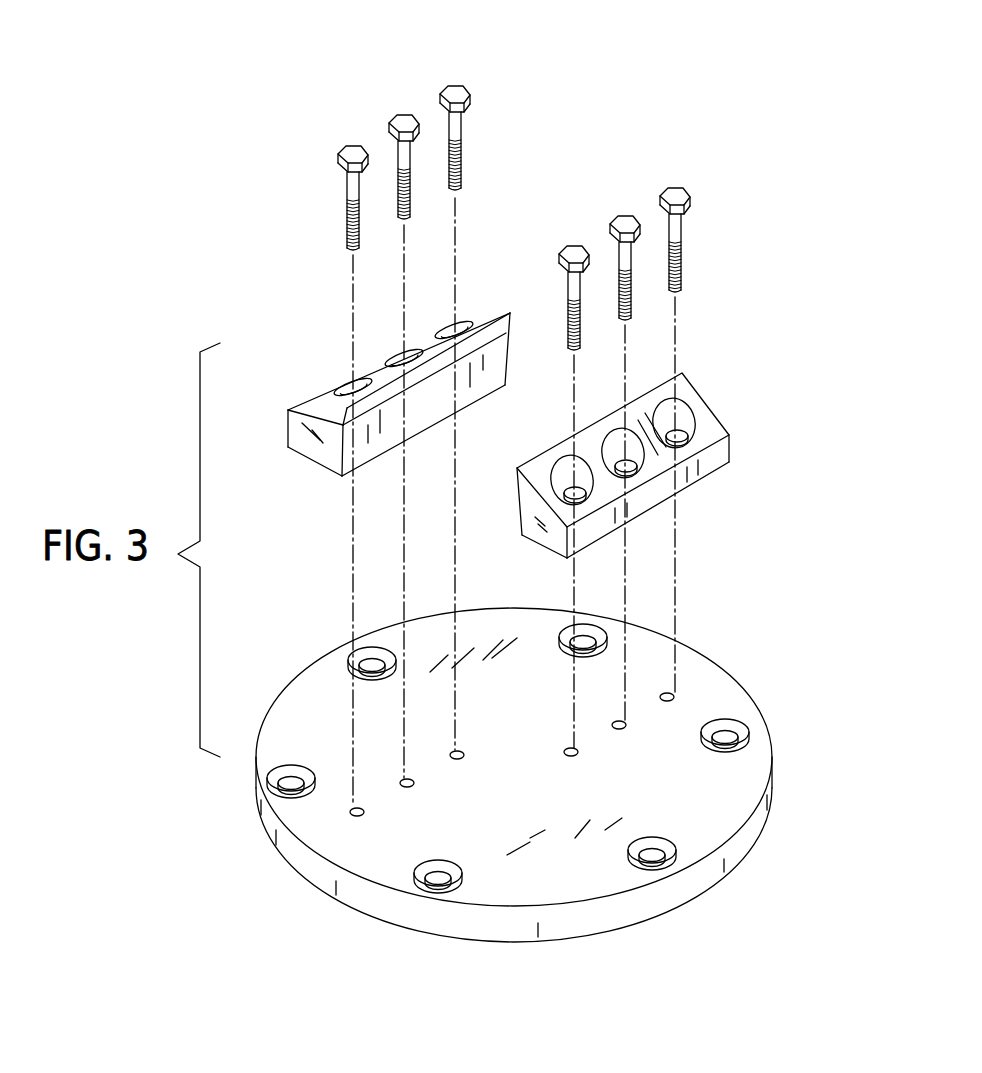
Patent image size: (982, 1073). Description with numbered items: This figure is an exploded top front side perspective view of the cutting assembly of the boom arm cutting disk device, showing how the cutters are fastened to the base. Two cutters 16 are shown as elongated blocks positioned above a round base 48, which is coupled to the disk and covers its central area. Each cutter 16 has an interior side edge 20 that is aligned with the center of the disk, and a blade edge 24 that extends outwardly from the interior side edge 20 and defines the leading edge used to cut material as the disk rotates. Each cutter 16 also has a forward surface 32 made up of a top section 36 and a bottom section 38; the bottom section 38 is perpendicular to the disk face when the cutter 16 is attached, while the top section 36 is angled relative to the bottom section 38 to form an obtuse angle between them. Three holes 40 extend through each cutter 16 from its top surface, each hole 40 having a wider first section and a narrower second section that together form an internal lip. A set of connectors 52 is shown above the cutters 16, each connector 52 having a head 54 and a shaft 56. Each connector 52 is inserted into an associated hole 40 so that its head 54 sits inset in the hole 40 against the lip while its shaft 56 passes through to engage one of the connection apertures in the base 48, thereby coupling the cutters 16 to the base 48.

The cutter 16 is at (538, 411).
The interior side edge 20 is at (520, 411).
The blade edge 24 is at (520, 377).
The forward surface 32 is at (417, 407).
The top section 36 is at (480, 372).
The bottom section 38 is at (363, 404).
The hole 40 is at (346, 375).
The base 48 is at (722, 692).
The connector 52 is at (555, 180).
The head 54 is at (458, 87).
The shaft 56 is at (463, 162).